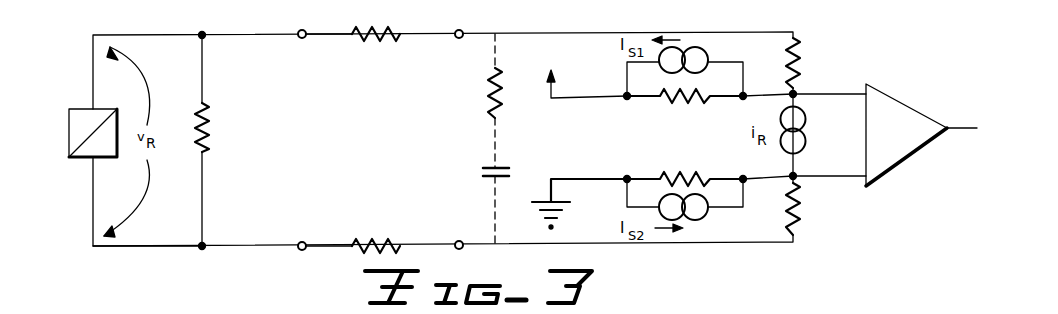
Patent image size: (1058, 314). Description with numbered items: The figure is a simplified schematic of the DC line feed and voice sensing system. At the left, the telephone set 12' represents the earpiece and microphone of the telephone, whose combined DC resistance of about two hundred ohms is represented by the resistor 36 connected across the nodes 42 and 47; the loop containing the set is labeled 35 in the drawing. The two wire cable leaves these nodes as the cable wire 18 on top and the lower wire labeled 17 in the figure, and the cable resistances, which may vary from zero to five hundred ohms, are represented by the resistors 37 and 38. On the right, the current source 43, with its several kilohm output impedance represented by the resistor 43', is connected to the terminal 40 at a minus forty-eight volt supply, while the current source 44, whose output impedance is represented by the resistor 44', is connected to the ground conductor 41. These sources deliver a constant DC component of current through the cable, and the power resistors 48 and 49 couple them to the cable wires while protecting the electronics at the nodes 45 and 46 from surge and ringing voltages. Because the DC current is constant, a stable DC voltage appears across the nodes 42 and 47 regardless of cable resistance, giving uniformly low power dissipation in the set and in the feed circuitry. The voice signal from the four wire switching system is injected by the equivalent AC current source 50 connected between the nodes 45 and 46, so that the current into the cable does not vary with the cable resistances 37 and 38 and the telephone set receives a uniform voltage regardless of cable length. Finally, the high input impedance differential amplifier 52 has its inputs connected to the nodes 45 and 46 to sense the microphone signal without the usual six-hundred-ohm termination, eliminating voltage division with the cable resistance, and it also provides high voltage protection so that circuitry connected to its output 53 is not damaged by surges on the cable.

The telephone set 12' is at (82, 164).
The sensor loop / bridge connection 35 is at (160, 251).
The resistor 36 is at (208, 127).
The node 42 is at (303, 39).
The node 47 is at (303, 250).
The resistor 37 is at (381, 40).
The resistor 38 is at (377, 240).
The cable wire 18 is at (340, 30).
The sensor lead 17 is at (333, 240).
The terminal 40 is at (556, 79).
The ground conductor 41 is at (551, 196).
The current source 43 is at (704, 54).
The resistor 43' is at (685, 113).
The resistor 44' is at (685, 164).
The current source 44 is at (702, 215).
The power resistor 48 is at (801, 49).
The node 45 is at (797, 93).
The equivalent AC current source 50 is at (806, 125).
The node 46 is at (797, 174).
The power resistor 49 is at (800, 214).
The differential amplifier 52 is at (885, 92).
The output 53 is at (962, 127).